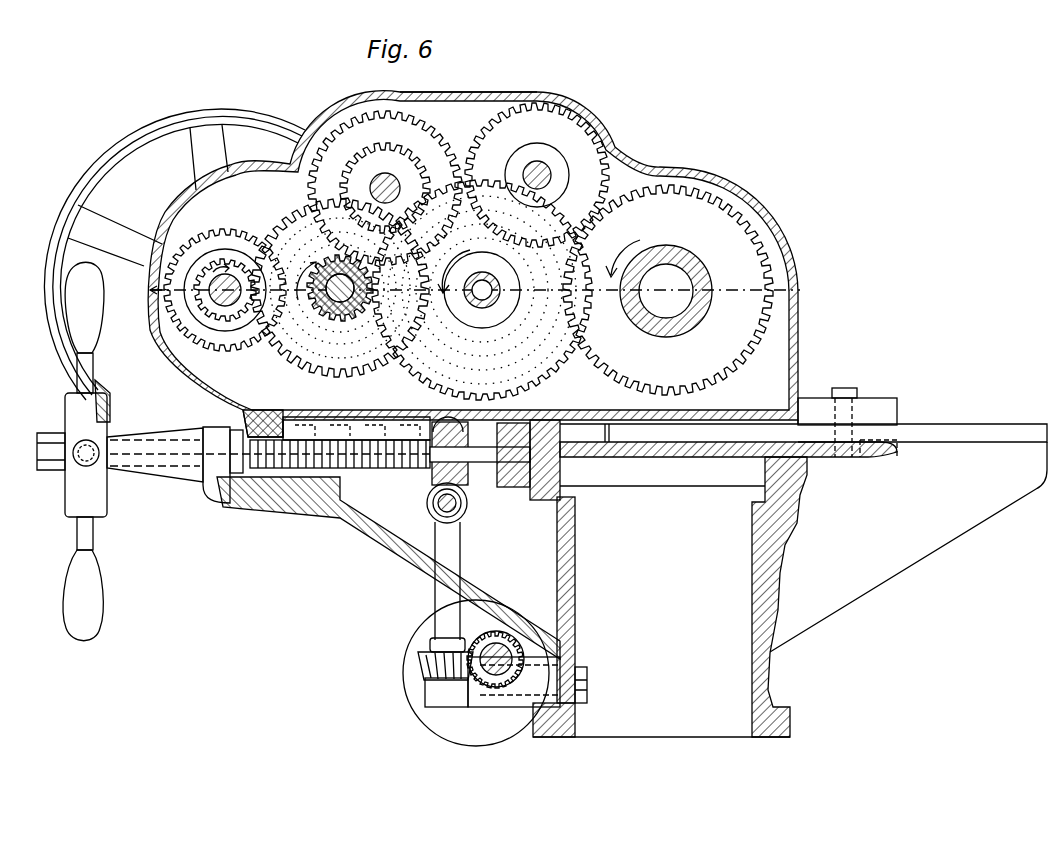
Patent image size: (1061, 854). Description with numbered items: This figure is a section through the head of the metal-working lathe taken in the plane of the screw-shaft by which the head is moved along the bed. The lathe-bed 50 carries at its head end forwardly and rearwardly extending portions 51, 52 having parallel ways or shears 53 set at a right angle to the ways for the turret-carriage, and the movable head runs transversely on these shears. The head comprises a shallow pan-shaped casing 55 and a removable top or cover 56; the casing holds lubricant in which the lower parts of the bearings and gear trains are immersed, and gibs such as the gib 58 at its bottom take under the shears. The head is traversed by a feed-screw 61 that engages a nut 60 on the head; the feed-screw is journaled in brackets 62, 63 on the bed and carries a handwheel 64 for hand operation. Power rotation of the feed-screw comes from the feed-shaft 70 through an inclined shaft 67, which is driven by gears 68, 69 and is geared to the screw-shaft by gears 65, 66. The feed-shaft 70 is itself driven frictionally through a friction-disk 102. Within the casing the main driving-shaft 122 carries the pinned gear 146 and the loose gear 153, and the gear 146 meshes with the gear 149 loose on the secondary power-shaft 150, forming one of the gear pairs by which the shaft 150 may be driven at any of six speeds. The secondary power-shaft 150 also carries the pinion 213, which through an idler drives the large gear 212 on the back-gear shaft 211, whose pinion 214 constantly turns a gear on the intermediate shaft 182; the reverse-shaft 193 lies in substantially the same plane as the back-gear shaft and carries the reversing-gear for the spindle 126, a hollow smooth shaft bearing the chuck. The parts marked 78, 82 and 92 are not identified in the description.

The lathe-bed 50 is at (778, 575).
The forwardly extending portion 51 is at (367, 530).
The rearwardly extending portion 52 is at (923, 547).
The ways or shears 53 is at (945, 430).
The pan-shaped casing 55 is at (800, 322).
The top or cover 56 is at (497, 97).
The gib 58 is at (887, 457).
The nut 60 is at (263, 473).
The feed-screw 61 is at (330, 480).
The bracket 62 is at (520, 480).
The bracket 63 is at (215, 483).
The handwheel 64 is at (76, 487).
The gear 65 is at (432, 472).
The gear 66 is at (428, 509).
The inclined shaft 67 is at (462, 555).
The gear 68 is at (420, 658).
The gear 69 is at (496, 662).
The feed-shaft 70 is at (497, 632).
The block 78 is at (440, 694).
The bracket plate 82 is at (585, 432).
The gear 92 is at (462, 302).
The friction-disk 102 is at (507, 740).
The main driving-shaft 122 is at (100, 402).
The spindle 126 is at (668, 290).
The gear 146 is at (222, 322).
The gear 149 is at (336, 412).
The secondary power-shaft 150 is at (328, 314).
The gear 153 is at (262, 240).
The intermediate shaft 182 is at (498, 306).
The reverse-shaft 193 is at (548, 172).
The back-gear shaft 211 is at (412, 154).
The large gear 212 is at (358, 124).
The pinion 213 is at (292, 222).
The pinion 214 is at (388, 165).